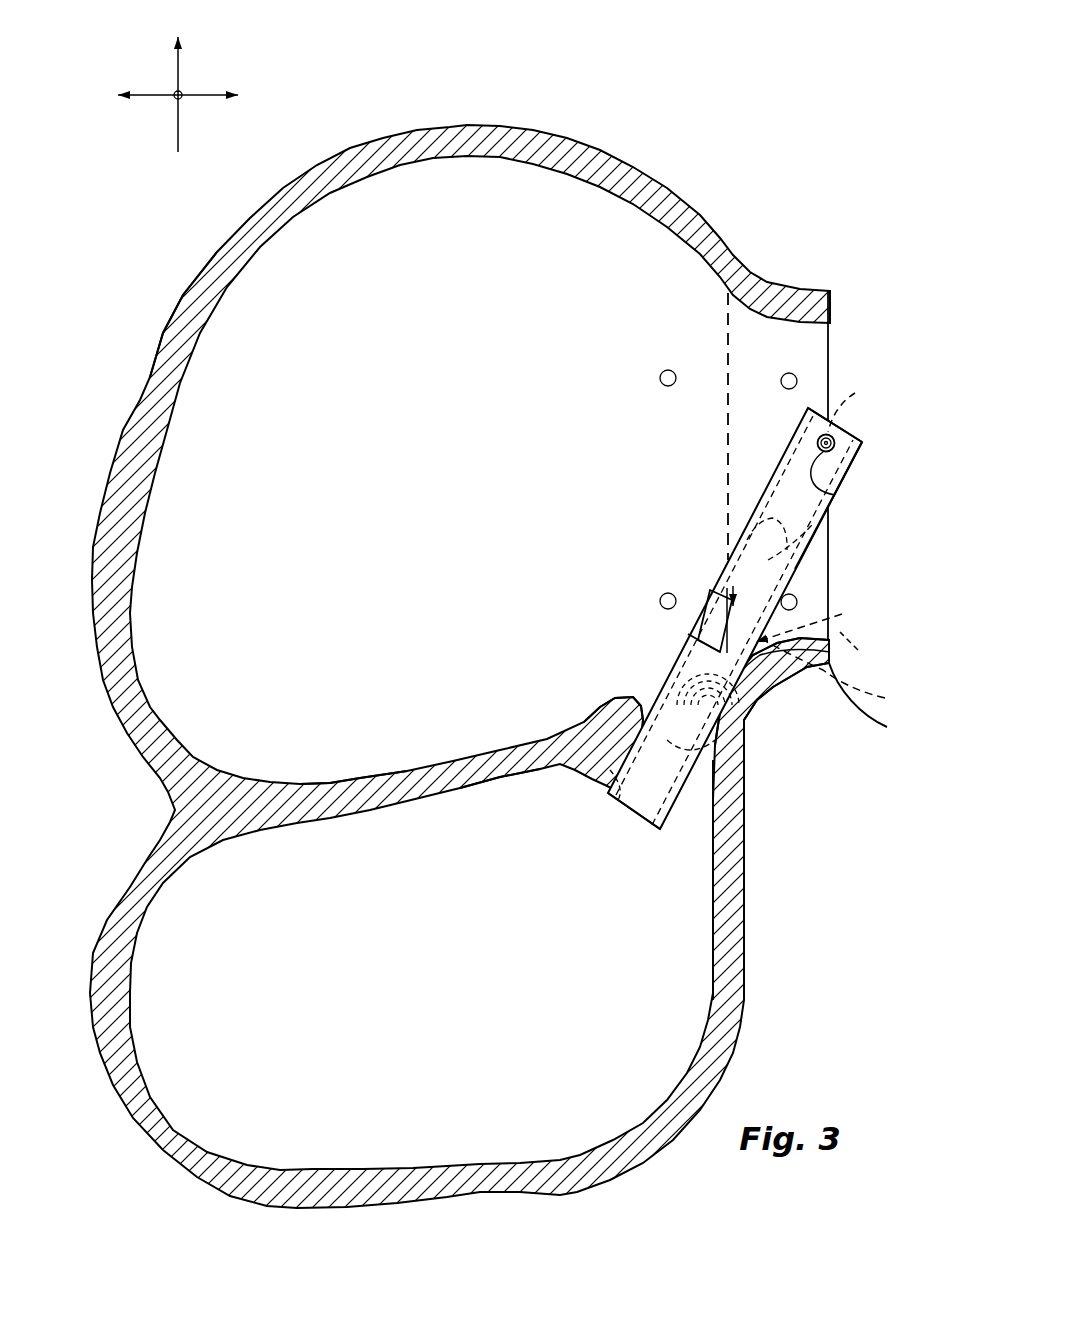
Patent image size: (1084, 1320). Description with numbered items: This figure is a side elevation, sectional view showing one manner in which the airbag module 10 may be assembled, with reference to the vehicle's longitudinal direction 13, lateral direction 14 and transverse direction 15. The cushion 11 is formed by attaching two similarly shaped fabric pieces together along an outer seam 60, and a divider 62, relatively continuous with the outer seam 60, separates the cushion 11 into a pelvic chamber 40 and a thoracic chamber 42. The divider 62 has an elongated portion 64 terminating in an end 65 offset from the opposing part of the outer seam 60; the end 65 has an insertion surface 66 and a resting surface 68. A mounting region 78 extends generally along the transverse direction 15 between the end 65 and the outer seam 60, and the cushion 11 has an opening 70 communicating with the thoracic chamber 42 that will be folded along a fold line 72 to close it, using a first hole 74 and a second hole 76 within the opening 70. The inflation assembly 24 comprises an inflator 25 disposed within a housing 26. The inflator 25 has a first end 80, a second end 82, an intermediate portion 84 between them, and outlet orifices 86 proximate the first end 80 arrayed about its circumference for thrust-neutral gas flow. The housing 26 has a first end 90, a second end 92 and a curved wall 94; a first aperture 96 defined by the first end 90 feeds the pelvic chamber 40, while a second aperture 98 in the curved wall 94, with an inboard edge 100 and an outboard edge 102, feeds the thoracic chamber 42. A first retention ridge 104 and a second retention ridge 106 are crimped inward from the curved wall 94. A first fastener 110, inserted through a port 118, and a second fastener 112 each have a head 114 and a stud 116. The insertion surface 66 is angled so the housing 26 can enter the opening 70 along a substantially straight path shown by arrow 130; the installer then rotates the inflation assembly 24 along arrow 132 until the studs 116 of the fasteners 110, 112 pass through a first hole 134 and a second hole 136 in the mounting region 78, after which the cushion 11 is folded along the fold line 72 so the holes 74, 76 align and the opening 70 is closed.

The airbag module 10 is at (746, 150).
The cushion 11 is at (607, 142).
The longitudinal direction 13 is at (200, 100).
The lateral direction 14 is at (183, 82).
The transverse direction 15 is at (170, 110).
The inflation assembly 24 is at (760, 463).
The inflator 25 is at (877, 703).
The housing 26 is at (819, 543).
The pelvic chamber 40 is at (416, 993).
The thoracic chamber 42 is at (409, 509).
The outer seam 60 is at (187, 300).
The divider 62 is at (421, 758).
The elongated portion 64 is at (507, 772).
The end 65 is at (607, 720).
The insertion surface 66 is at (622, 797).
The resting surface 68 is at (641, 705).
The opening 70 is at (751, 436).
The fold line 72 is at (727, 392).
The first hole 74 is at (789, 372).
The second hole 76 is at (798, 603).
The mounting region 78 is at (646, 554).
The first end 80 is at (718, 765).
The second end 82 is at (804, 479).
The intermediate portion 84 is at (841, 674).
The outlet orifices 86 is at (745, 708).
The first end 90 is at (650, 830).
The second end 92 is at (847, 437).
The curved wall 94 is at (770, 560).
The first aperture 96 is at (645, 822).
The second aperture 98 is at (697, 612).
The inboard edge 100 is at (733, 586).
The outboard edge 102 is at (705, 630).
The first retention ridge 104 is at (831, 637).
The second retention ridge 106 is at (670, 660).
The first fastener 110 is at (824, 433).
The second fastener 112 is at (829, 666).
The head 114 is at (835, 495).
The stud 116 is at (871, 400).
The port 118 is at (845, 471).
The arrow 130 is at (889, 327).
The arrow 132 is at (681, 478).
The first hole 134 is at (643, 367).
The second hole 136 is at (659, 603).